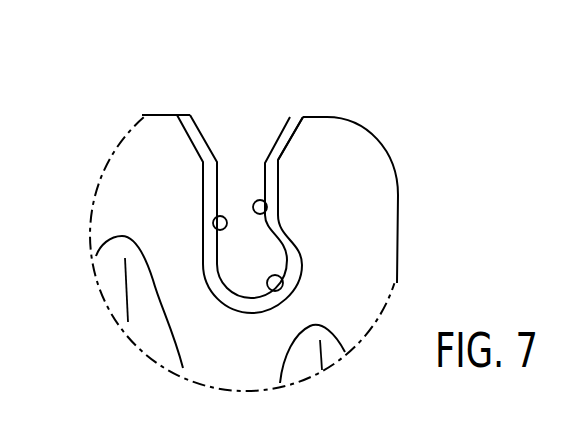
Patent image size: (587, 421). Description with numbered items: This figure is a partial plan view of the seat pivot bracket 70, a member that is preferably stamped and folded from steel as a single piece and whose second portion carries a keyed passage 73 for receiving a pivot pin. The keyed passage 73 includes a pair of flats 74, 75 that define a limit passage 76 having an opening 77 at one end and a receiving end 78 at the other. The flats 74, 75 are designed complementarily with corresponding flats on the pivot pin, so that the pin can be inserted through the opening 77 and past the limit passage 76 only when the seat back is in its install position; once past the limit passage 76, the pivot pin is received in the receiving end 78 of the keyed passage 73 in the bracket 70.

The seat pivot bracket 70 is at (127, 358).
The keyed passage 73 is at (215, 113).
The flat 74 is at (213, 223).
The flat 75 is at (267, 209).
The limit passage 76 is at (237, 195).
The opening 77 is at (263, 132).
The receiving end 78 is at (280, 285).